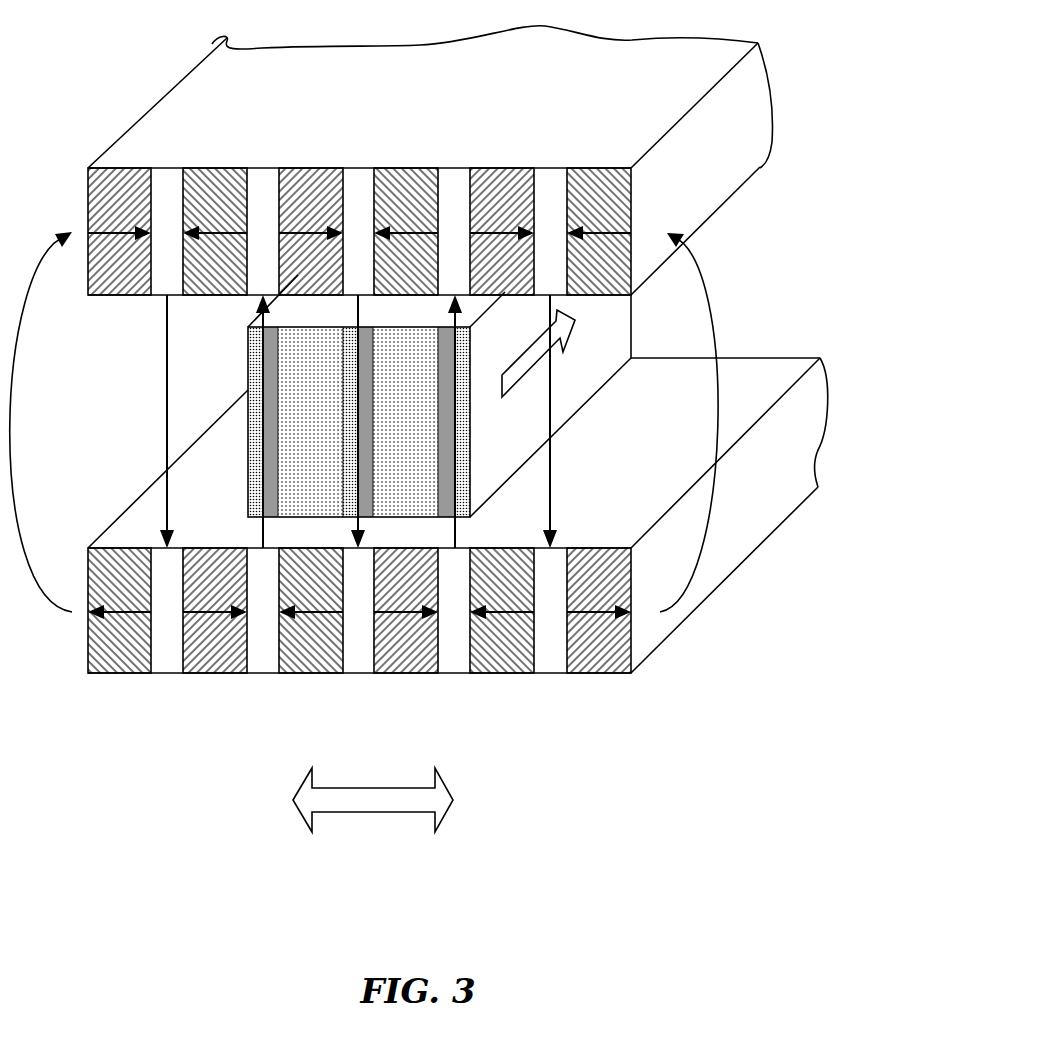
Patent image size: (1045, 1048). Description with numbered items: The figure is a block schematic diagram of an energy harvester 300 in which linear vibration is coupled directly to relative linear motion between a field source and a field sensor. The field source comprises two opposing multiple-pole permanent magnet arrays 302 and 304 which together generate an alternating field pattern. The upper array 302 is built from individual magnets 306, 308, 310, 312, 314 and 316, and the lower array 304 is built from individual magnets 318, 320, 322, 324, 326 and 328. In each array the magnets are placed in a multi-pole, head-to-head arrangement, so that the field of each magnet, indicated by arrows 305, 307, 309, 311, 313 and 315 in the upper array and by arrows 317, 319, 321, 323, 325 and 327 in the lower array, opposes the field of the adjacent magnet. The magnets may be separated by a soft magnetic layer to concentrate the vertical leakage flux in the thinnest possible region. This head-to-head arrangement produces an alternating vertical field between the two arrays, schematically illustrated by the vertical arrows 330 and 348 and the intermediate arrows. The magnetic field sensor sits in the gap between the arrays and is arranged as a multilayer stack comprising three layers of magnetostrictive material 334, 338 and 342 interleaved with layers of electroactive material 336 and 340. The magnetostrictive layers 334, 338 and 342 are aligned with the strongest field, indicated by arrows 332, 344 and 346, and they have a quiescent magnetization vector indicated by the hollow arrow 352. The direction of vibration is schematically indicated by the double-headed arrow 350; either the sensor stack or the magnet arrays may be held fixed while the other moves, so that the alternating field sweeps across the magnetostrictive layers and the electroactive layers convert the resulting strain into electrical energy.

The energy harvester 300 is at (112, 777).
The multiple-pole permanent magnet array 302 is at (223, 73).
The multiple-pole permanent magnet array 304 is at (757, 517).
The field arrow 305 is at (117, 230).
The individual magnet 306 is at (104, 182).
The field arrow 307 is at (217, 227).
The individual magnet 308 is at (198, 180).
The field arrow 309 is at (327, 227).
The individual magnet 310 is at (295, 180).
The field arrow 311 is at (408, 230).
The individual magnet 312 is at (390, 180).
The field arrow 313 is at (503, 230).
The individual magnet 314 is at (487, 187).
The field arrow 315 is at (600, 230).
The individual magnet 316 is at (583, 180).
The field arrow 317 is at (120, 613).
The individual magnet 318 is at (103, 657).
The field arrow 319 is at (212, 613).
The individual magnet 320 is at (207, 653).
The field arrow 321 is at (310, 613).
The individual magnet 322 is at (303, 653).
The field arrow 323 is at (412, 613).
The individual magnet 324 is at (397, 653).
The field arrow 325 is at (500, 613).
The individual magnet 326 is at (485, 647).
The field arrow 327 is at (600, 613).
The individual magnet 328 is at (582, 647).
The alternating vertical field arrow 330 is at (164, 373).
The strongest field arrow 332 is at (264, 468).
The magnetostrictive material layer 334 is at (256, 373).
The electroactive material layer 336 is at (293, 373).
The magnetostrictive material layer 338 is at (368, 470).
The coil core region 340 is at (390, 373).
The magnetostrictive material layer 342 is at (462, 467).
The strongest field arrow 344 is at (358, 422).
The strongest field arrow 346 is at (455, 422).
The alternating vertical field arrow 348 is at (552, 423).
The direction of vibration arrow 350 is at (358, 802).
The quiescent magnetization vector arrow 352 is at (572, 335).